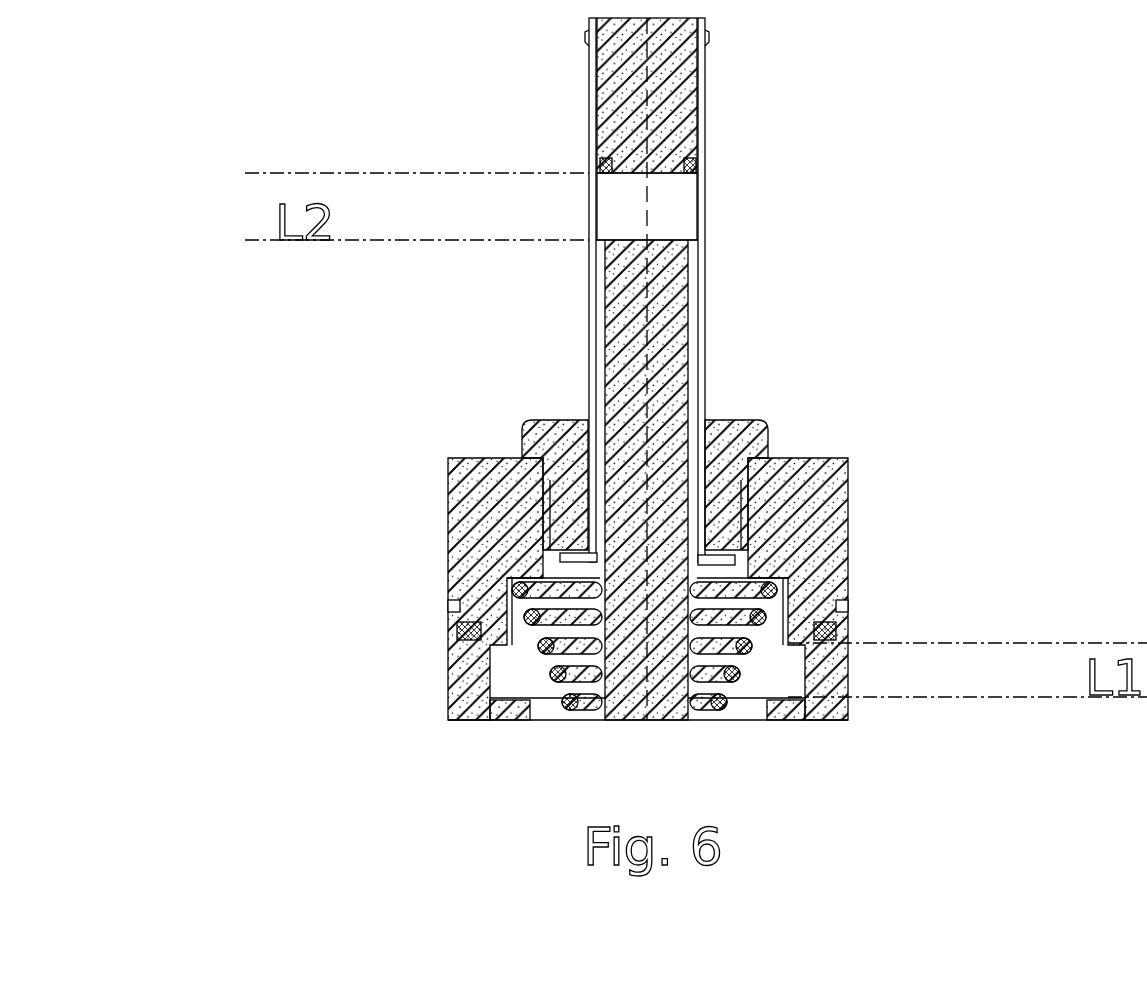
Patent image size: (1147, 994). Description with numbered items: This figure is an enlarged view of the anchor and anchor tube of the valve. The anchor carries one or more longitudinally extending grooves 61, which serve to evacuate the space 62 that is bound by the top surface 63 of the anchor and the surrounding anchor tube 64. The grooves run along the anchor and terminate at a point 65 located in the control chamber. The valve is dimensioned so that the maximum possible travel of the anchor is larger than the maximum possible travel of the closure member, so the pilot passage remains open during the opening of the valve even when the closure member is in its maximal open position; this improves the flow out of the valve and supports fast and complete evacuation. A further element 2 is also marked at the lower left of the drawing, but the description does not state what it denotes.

The piston rod 61 is at (588, 335).
The annular groove 62 is at (680, 192).
The shoulder 63 is at (714, 239).
The outer tube 64 is at (726, 341).
The return spring 65 is at (584, 637).
The base plate 2 is at (474, 709).